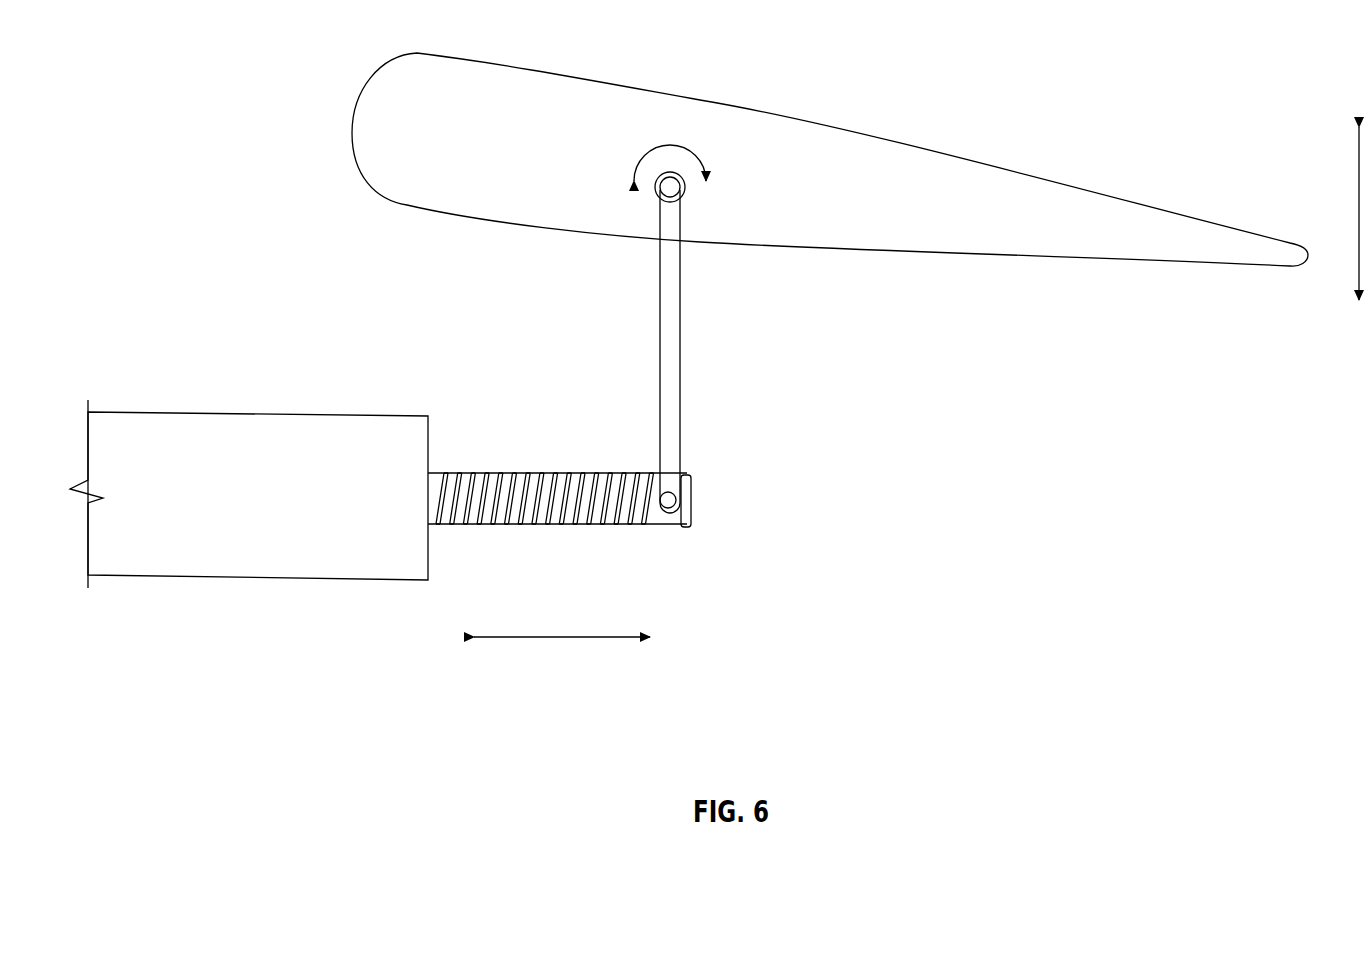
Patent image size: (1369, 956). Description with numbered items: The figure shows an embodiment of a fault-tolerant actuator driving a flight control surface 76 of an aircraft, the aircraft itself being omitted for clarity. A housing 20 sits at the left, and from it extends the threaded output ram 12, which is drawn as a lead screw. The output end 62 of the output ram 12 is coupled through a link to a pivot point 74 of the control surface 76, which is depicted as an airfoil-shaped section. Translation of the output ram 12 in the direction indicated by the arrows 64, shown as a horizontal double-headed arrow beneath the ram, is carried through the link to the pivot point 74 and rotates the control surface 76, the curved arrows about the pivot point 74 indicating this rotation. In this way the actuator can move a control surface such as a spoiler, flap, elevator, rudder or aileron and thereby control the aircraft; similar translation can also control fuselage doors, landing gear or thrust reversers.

The control surface 76 is at (953, 168).
The pivot point 74 is at (671, 189).
The motor housing 20 is at (245, 413).
The output ram 12 is at (565, 523).
The output end 62 is at (692, 499).
The arrows 64 is at (558, 637).